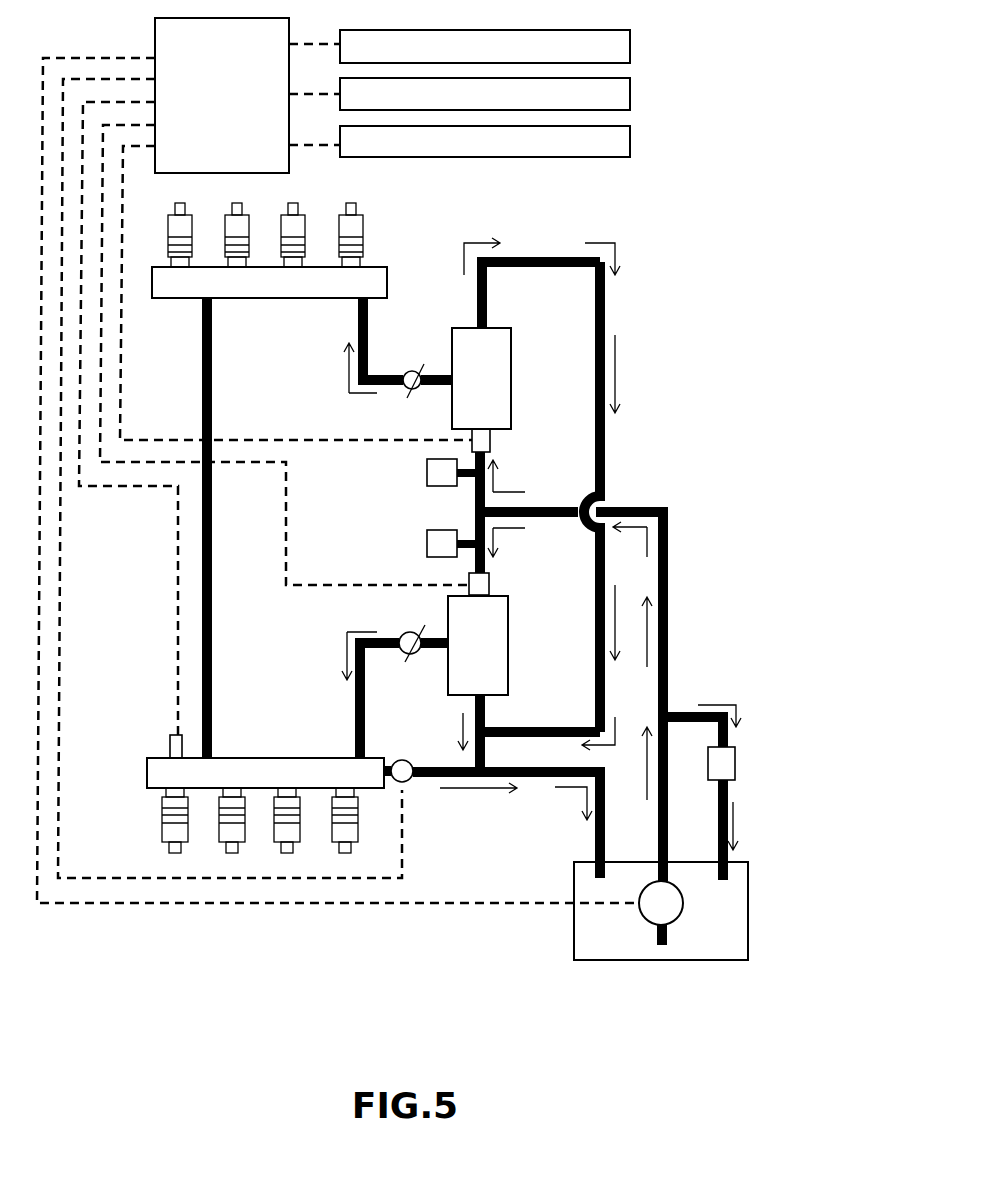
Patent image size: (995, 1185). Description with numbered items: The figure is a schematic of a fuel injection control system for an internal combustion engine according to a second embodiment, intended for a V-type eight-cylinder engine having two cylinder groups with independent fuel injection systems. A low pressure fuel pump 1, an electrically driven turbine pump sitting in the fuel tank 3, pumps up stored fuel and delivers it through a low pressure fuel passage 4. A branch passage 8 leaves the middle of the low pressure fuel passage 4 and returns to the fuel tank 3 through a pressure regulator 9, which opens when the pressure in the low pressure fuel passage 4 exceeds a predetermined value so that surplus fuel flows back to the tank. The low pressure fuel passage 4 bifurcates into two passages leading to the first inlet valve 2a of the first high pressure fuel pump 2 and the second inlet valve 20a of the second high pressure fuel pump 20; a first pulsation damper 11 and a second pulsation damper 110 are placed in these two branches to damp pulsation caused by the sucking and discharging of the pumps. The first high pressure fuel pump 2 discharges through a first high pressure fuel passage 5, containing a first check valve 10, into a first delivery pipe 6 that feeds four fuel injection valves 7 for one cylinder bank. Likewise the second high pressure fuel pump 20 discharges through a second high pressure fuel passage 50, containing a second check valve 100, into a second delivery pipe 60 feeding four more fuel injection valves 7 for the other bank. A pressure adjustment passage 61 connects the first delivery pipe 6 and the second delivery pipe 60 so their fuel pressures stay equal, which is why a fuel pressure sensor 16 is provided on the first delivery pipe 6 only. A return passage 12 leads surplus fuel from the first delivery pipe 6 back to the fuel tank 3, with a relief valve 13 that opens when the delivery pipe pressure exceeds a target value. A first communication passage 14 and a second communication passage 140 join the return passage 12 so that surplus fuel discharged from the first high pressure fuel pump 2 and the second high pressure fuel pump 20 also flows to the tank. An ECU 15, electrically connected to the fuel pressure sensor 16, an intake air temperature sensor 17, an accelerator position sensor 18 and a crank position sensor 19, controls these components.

The low pressure fuel pump 1 is at (647, 918).
The first high pressure fuel pump 2 is at (508, 653).
The first inlet valve 2a is at (492, 582).
The fuel tank 3 is at (698, 960).
The low pressure fuel passage 4 is at (668, 538).
The first high pressure fuel passage 5 is at (365, 715).
The first delivery pipe 6 is at (265, 757).
The fuel injection valves 7 is at (360, 226).
The branch passage 8 is at (683, 713).
The pressure regulator 9 is at (712, 780).
The first check valve 10 is at (407, 630).
The first pulsation damper 11 is at (430, 543).
The return passage 12 is at (532, 778).
The relief valve 13 is at (412, 787).
The first communication passage 14 is at (483, 712).
The ECU 15 is at (155, 40).
The fuel pressure sensor 16 is at (168, 747).
The intake air temperature sensor 17 is at (632, 46).
The accelerator position sensor 18 is at (632, 94).
The crank position sensor 19 is at (632, 141).
The second high pressure fuel pump 20 is at (508, 370).
The second inlet valve 20a is at (492, 440).
The second high pressure fuel passage 50 is at (368, 330).
The second delivery pipe 60 is at (268, 298).
The pressure adjustment passage 61 is at (212, 625).
The second check valve 100 is at (405, 393).
The second pulsation damper 110 is at (427, 470).
The second communication passage 140 is at (545, 260).